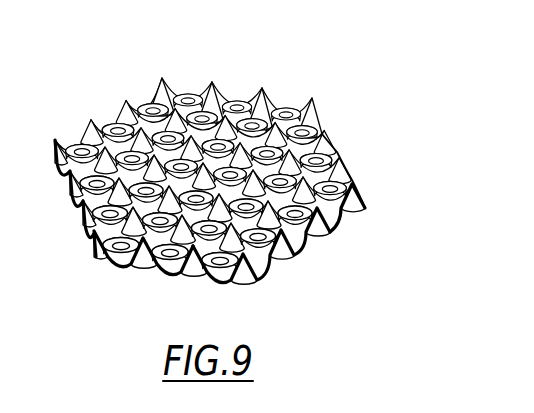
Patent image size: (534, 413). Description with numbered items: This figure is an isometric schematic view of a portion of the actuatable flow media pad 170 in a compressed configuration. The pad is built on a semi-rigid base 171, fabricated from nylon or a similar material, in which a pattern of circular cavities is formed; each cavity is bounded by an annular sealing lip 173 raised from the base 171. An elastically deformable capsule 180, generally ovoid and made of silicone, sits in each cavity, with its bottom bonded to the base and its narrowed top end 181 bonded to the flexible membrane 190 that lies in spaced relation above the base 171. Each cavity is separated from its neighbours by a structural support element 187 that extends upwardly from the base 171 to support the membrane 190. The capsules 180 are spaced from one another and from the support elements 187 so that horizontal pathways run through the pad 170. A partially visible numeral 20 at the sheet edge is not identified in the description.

The actuatable flow media pad 170 is at (86, 78).
The structural support element 187 is at (212, 100).
The flexible membrane 190 is at (225, 97).
The top end 181 is at (283, 113).
The annular sealing lip 173 is at (338, 222).
The capsule 180 is at (300, 228).
The semi-rigid base 171 is at (152, 265).
The element 20 is at (9, 315).